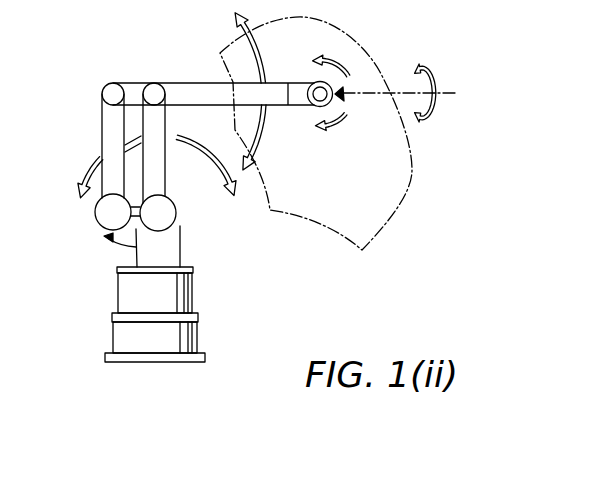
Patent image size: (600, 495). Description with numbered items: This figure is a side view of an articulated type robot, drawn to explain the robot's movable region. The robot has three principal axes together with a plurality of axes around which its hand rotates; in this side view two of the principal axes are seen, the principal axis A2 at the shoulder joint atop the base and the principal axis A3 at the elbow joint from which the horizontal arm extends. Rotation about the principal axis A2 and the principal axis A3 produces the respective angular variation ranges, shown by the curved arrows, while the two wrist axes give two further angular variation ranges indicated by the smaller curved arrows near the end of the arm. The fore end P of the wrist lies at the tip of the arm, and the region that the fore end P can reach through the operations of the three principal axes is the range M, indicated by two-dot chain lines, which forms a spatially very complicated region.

The principal axis A3 is at (153, 93).
The principal axis A2 is at (156, 212).
The fore end of the wrist P is at (343, 93).
The movable region M is at (407, 190).